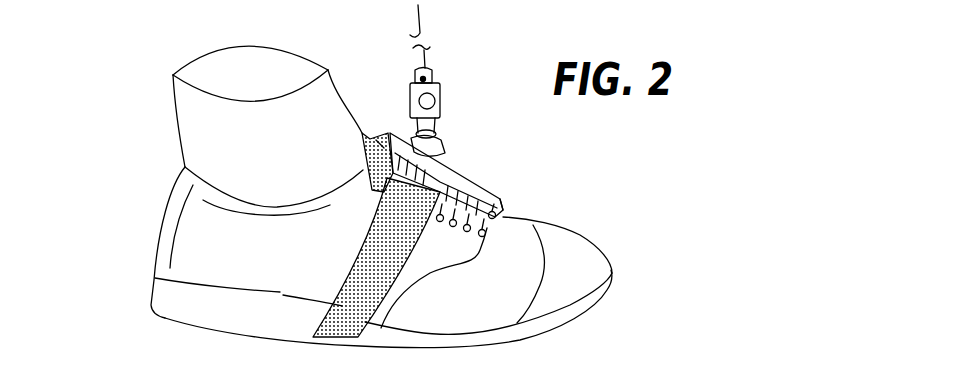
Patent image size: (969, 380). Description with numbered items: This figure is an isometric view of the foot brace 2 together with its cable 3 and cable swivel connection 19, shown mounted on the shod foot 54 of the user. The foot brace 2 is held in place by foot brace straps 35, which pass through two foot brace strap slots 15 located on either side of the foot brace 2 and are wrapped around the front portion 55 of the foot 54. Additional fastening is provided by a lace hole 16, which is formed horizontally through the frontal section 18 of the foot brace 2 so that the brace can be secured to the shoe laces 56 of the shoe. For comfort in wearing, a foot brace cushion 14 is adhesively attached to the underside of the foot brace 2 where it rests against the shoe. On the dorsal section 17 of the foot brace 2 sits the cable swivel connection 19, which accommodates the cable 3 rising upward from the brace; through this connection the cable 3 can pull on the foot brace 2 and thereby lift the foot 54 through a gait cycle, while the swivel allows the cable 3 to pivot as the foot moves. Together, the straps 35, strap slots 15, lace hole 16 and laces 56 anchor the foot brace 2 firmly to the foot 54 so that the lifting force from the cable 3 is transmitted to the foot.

The foot brace 2 is at (530, 147).
The cable 3 is at (425, 18).
The foot brace cushion 14 is at (377, 132).
The foot brace strap slots 15 is at (443, 181).
The lace hole 16 is at (510, 214).
The dorsal section 17 is at (448, 150).
The frontal section 18 is at (503, 197).
The cable swivel connection 19 is at (437, 72).
The foot brace straps 35 is at (383, 248).
The foot 54 is at (128, 238).
The front portion 55 is at (620, 281).
The shoe laces 56 is at (485, 227).